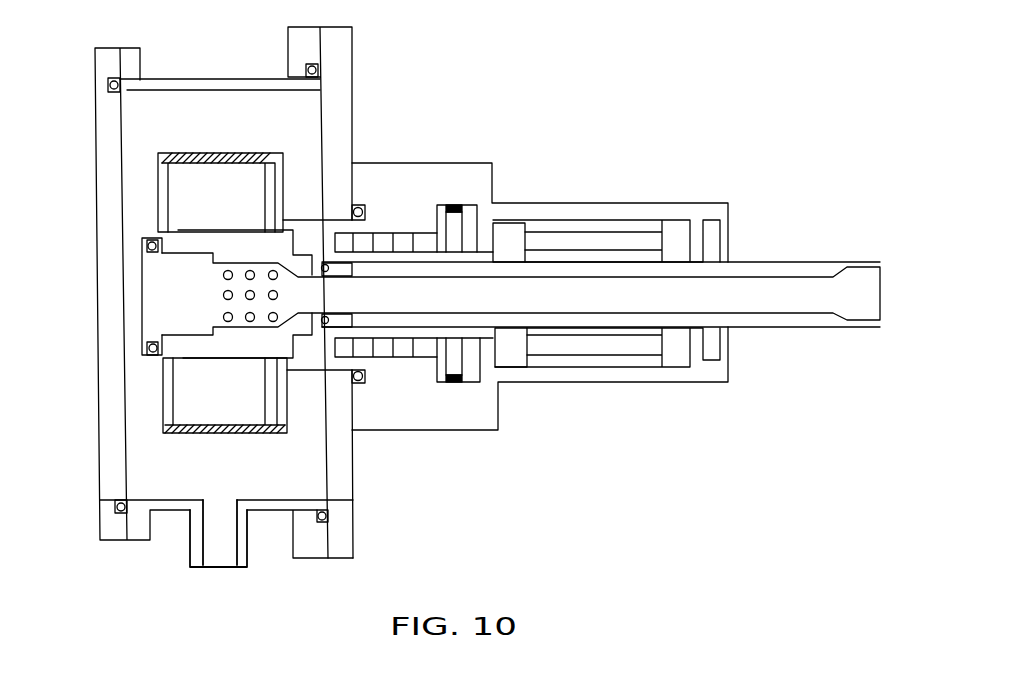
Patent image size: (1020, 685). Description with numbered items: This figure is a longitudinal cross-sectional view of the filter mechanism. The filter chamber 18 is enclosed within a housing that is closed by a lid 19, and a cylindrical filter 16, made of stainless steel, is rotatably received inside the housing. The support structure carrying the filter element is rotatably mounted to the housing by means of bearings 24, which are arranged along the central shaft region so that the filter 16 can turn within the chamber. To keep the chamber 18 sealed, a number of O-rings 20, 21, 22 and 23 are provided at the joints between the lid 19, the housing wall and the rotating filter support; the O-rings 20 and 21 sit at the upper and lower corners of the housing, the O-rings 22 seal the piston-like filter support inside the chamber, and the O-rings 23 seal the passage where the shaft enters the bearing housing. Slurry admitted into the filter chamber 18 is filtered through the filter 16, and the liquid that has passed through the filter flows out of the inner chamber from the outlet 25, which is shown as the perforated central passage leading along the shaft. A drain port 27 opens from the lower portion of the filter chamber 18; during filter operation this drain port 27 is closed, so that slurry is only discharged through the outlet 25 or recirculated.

The cylindrical filter 16 is at (183, 153).
The filter chamber 18 is at (228, 108).
The lid 19 is at (98, 385).
The O-ring 20 is at (110, 80).
The O-ring 21 is at (318, 70).
The O-ring 22 is at (153, 344).
The O-ring 23 is at (363, 207).
The bearing 24 is at (513, 237).
The outlet 25 is at (247, 273).
The drain port 27 is at (206, 570).